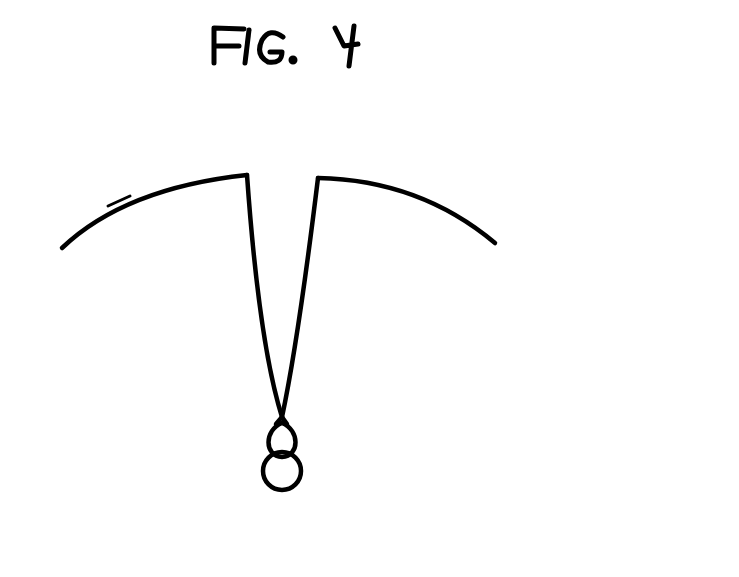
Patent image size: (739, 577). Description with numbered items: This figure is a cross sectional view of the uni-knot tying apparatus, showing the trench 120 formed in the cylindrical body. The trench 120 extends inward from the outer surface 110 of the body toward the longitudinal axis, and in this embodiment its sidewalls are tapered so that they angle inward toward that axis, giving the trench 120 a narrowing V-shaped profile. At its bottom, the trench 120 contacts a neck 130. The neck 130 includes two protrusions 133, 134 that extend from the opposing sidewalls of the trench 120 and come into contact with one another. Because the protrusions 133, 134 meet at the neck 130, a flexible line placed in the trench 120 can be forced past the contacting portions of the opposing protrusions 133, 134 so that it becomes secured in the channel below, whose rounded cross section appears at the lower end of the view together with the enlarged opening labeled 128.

The outer surface 110 is at (453, 219).
The trench 120 is at (293, 177).
The neck 130 is at (462, 383).
The protrusion 134 is at (309, 433).
The protrusion 133 is at (238, 434).
The distal loop 128 is at (299, 483).